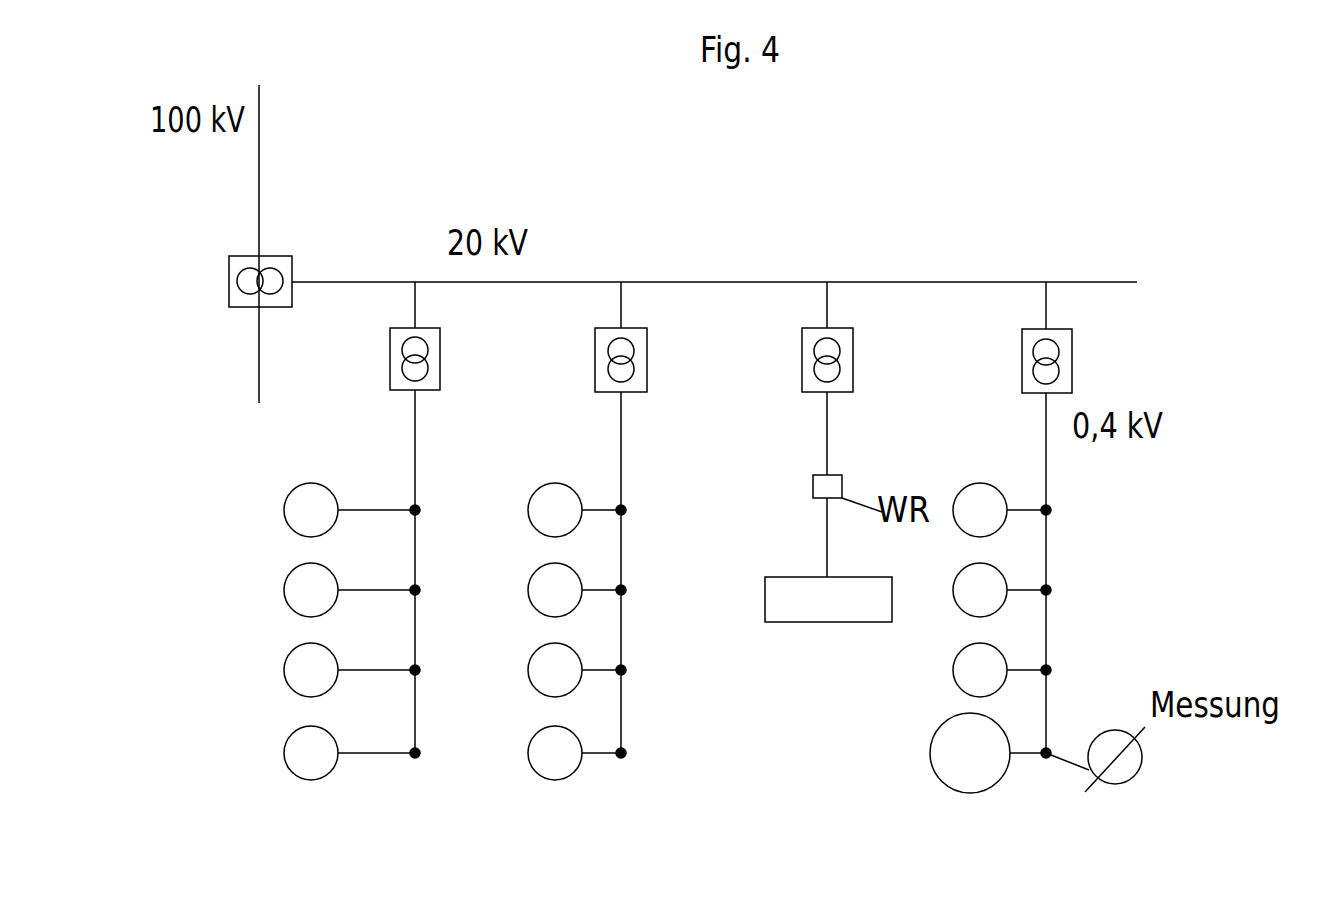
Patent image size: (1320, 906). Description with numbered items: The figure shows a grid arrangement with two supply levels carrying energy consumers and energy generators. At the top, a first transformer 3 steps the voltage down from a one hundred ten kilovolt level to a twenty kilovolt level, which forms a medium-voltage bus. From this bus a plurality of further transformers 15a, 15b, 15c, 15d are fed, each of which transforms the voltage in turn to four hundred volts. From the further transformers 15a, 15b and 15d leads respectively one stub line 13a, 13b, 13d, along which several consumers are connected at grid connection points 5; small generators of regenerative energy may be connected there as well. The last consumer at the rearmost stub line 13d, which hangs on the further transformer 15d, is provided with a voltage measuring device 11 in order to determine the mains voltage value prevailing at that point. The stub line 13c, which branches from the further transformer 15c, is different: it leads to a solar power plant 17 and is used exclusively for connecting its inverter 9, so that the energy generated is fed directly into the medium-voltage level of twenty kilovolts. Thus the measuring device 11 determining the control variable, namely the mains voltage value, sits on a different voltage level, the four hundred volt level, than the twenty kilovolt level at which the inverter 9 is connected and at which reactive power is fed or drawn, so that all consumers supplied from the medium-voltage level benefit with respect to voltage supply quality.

The first transformer 3 is at (229, 307).
The further transformer 15a is at (390, 358).
The further transformer 15b is at (595, 358).
The further transformer 15c is at (802, 360).
The further transformer 15d is at (1022, 358).
The stub line 13a is at (415, 433).
The stub line 13b is at (621, 433).
The stub line 13c is at (827, 435).
The stub line 13d is at (1046, 435).
The grid connection point 5 is at (415, 510).
The inverter 9 is at (810, 500).
The solar power plant 17 is at (828, 622).
The voltage measuring device 11 is at (1142, 777).